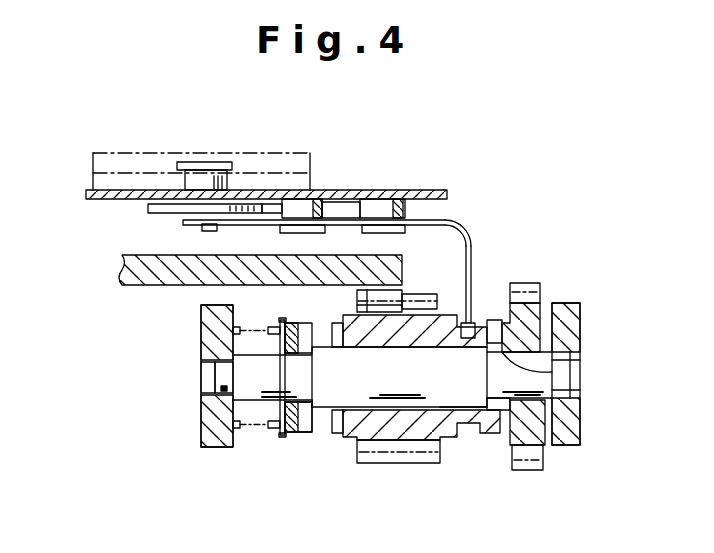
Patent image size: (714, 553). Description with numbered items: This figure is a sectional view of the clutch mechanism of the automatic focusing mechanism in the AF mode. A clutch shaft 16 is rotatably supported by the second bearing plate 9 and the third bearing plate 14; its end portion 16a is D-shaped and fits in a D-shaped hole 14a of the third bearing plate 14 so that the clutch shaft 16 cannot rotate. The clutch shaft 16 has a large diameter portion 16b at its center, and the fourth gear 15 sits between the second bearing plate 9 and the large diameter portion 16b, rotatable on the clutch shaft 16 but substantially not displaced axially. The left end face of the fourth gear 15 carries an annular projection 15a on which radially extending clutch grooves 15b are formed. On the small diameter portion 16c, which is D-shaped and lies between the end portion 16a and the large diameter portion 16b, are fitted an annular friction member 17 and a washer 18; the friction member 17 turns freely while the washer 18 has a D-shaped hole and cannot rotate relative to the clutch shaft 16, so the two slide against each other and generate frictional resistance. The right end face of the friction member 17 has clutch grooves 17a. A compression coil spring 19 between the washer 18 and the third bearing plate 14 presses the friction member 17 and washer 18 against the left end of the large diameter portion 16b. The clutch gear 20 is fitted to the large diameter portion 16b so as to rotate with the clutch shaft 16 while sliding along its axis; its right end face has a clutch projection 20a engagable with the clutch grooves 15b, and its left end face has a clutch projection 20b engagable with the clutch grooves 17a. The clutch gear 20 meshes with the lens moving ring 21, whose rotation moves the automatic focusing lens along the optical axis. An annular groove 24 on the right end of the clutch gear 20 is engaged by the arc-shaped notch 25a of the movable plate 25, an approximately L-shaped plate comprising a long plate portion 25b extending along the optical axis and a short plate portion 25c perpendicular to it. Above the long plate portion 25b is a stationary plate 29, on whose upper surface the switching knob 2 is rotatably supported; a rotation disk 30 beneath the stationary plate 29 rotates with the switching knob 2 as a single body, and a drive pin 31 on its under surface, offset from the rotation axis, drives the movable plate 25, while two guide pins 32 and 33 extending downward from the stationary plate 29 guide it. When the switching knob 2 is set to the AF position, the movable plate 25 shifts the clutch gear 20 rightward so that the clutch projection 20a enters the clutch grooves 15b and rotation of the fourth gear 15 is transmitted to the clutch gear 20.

The switching knob 2 is at (100, 163).
The second bearing plate 9 is at (575, 430).
The third bearing plate 14 is at (207, 428).
The hole 14a is at (203, 386).
The fourth gear 15 is at (537, 433).
The annular projection 15a is at (507, 423).
The clutch grooves 15b is at (556, 370).
The clutch shaft 16 is at (388, 418).
The end portion 16a is at (215, 372).
The large diameter portion 16b is at (450, 408).
The small diameter portion 16c is at (304, 440).
The friction member 17 is at (306, 422).
The clutch grooves 17a is at (313, 433).
The washer 18 is at (283, 437).
The compression coil spring 19 is at (247, 432).
The clutch gear 20 is at (428, 466).
The clutch projection 20a is at (538, 284).
The clutch projection 20b is at (333, 322).
The lens moving ring 21 is at (402, 268).
The annular groove 24 is at (460, 323).
The movable plate 25 is at (361, 237).
The arc-shaped notch 25a is at (476, 300).
The long plate portion 25b is at (342, 214).
The short plate portion 25c is at (476, 255).
The stationary plate 29 is at (418, 192).
The rotation disk 30 is at (149, 208).
The drive pin 31 is at (202, 229).
The guide pin 32 is at (318, 194).
The guide pin 33 is at (395, 194).